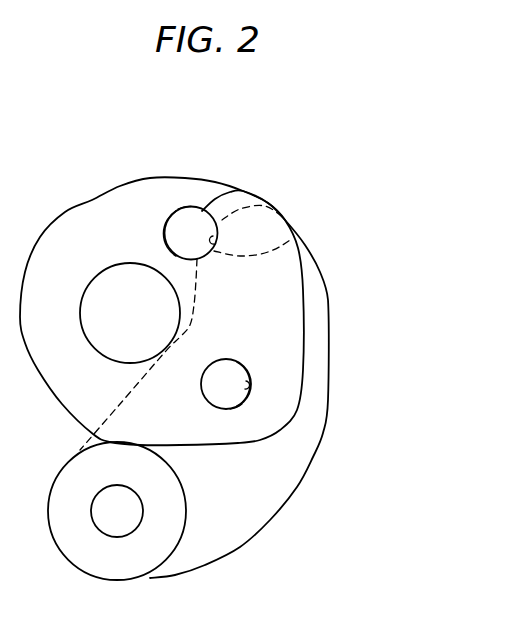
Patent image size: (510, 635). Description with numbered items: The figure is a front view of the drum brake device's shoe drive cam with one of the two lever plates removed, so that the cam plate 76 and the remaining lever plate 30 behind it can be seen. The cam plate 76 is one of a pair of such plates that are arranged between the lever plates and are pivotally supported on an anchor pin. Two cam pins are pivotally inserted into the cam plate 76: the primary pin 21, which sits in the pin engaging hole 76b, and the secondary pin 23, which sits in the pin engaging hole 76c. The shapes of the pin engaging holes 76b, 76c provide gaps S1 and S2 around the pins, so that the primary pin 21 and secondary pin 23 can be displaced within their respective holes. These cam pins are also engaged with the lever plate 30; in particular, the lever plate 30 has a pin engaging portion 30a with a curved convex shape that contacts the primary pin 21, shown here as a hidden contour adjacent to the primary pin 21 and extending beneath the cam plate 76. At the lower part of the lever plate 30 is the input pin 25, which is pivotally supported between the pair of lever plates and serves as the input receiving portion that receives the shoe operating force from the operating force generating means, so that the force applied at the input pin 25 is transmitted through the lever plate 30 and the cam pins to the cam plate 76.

The cam plate 76 is at (92, 200).
The pin engaging hole 76b is at (163, 222).
The pin engaging hole 76c is at (250, 392).
The gap S1 is at (172, 210).
The gap S2 is at (248, 403).
The primary pin 21 is at (193, 230).
The secondary pin 23 is at (222, 380).
The input pin 25 is at (110, 520).
The lever plate 30 is at (267, 497).
The pin engaging portion 30a is at (293, 238).